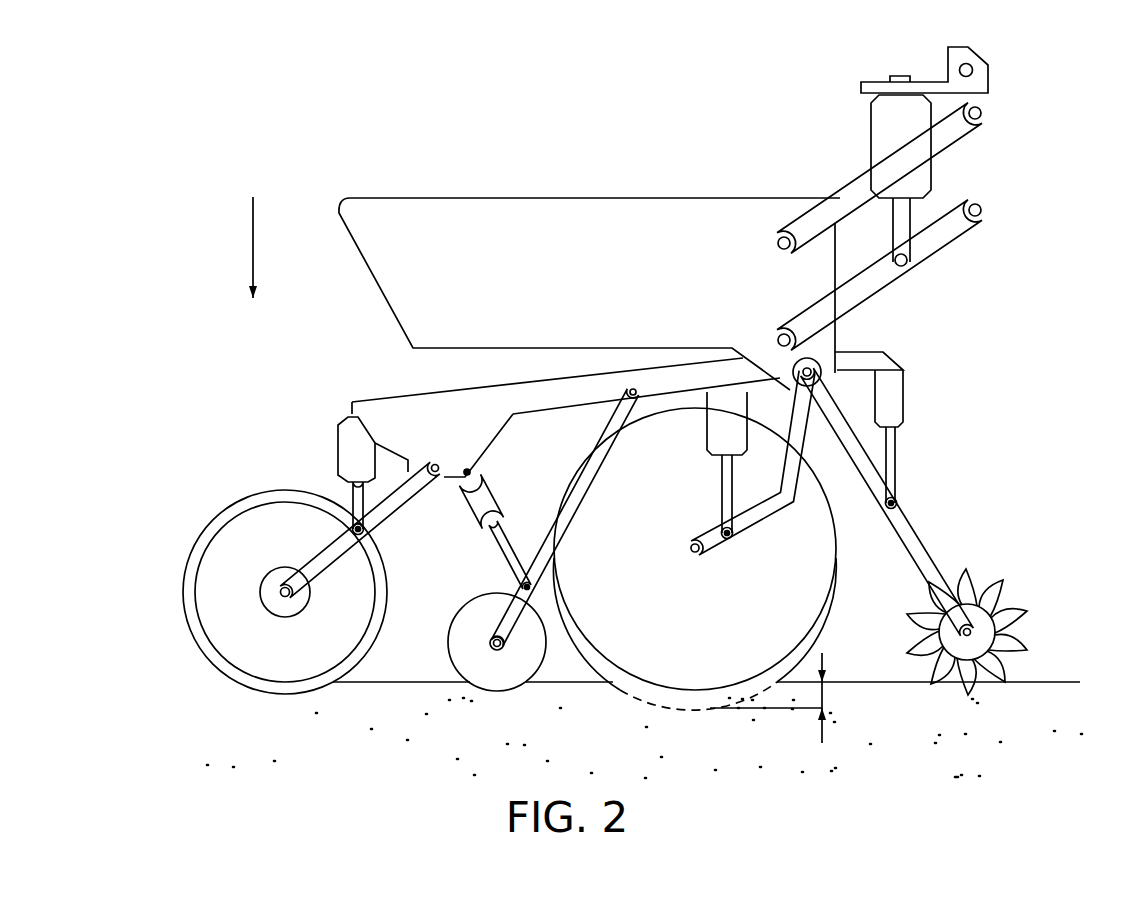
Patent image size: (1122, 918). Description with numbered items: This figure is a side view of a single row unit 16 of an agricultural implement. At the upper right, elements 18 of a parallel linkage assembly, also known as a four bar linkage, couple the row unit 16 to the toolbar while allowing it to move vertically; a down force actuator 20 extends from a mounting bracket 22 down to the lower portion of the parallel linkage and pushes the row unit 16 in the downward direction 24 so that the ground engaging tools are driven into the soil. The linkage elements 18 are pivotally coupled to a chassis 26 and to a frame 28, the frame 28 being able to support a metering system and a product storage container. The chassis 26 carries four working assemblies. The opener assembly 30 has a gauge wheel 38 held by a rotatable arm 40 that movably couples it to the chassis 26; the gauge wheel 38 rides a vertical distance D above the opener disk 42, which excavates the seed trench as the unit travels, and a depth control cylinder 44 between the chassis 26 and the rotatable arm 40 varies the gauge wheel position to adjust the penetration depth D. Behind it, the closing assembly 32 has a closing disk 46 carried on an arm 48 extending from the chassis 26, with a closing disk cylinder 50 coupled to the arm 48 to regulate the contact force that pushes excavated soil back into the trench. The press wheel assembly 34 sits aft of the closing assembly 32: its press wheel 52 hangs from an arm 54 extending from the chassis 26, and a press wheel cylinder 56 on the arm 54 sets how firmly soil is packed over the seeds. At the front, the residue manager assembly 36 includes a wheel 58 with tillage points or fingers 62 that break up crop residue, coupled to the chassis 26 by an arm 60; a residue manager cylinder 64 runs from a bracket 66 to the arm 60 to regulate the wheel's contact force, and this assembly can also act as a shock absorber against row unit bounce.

The row unit 16 is at (453, 87).
The parallel linkage elements 18 is at (960, 200).
The down force actuator 20 is at (870, 137).
The mounting bracket 22 is at (948, 62).
The downward direction 24 is at (253, 242).
The chassis 26 is at (386, 398).
The frame 28 is at (592, 198).
The opener assembly 30 is at (850, 610).
The closing assembly 32 is at (463, 588).
The press wheel assembly 34 is at (217, 460).
The residue manager assembly 36 is at (937, 493).
The gauge wheel 38 is at (838, 515).
The rotatable arm 40 is at (733, 542).
The opener disk 42 is at (638, 695).
The depth control cylinder 44 is at (707, 452).
The closing disk 46 is at (448, 645).
The arm 48 is at (607, 420).
The closing disk cylinder 50 is at (495, 492).
The press wheel 52 is at (184, 583).
The arm 54 is at (397, 513).
The press wheel cylinder 56 is at (338, 452).
The wheel 58 is at (980, 643).
The arm 60 is at (920, 548).
The tillage points or fingers 62 is at (1008, 590).
The residue manager cylinder 64 is at (903, 397).
The bracket 66 is at (877, 351).
The vertical distance / penetration depth D is at (822, 725).